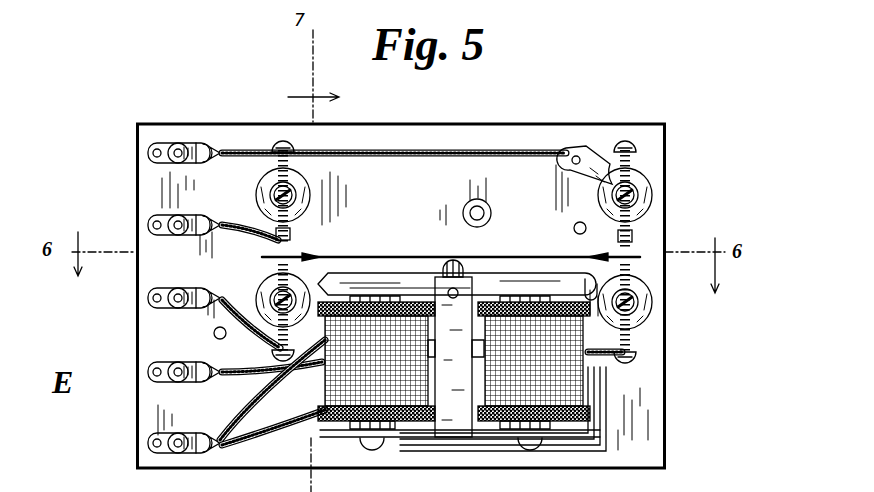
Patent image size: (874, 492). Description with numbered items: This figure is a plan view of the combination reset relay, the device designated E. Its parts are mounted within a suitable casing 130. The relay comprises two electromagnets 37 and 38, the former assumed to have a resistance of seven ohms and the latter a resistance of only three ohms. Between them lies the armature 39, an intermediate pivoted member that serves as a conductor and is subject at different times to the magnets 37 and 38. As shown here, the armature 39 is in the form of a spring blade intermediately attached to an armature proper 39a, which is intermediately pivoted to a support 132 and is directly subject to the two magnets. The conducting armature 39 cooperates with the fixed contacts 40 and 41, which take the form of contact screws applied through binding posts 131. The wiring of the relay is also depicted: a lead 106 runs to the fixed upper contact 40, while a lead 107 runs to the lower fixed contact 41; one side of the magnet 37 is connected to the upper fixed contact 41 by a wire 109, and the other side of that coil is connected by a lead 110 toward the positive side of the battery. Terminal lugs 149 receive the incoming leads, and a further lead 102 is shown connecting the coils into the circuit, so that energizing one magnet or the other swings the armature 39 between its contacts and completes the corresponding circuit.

The casing 130 is at (650, 406).
The terminal lug 149 is at (272, 350).
The lead 107 is at (540, 148).
The lead 106 is at (232, 225).
The wire 109 is at (245, 298).
The lead 110 is at (222, 312).
The lead 102 is at (295, 370).
The electromagnet 38 is at (305, 428).
The binding post 131 is at (262, 188).
The fixed contact 41 is at (275, 257).
The fixed contact 40 is at (285, 253).
The armature 39 is at (385, 272).
The armature proper 39a is at (420, 285).
The support 132 is at (463, 364).
The electromagnet 37 is at (560, 404).